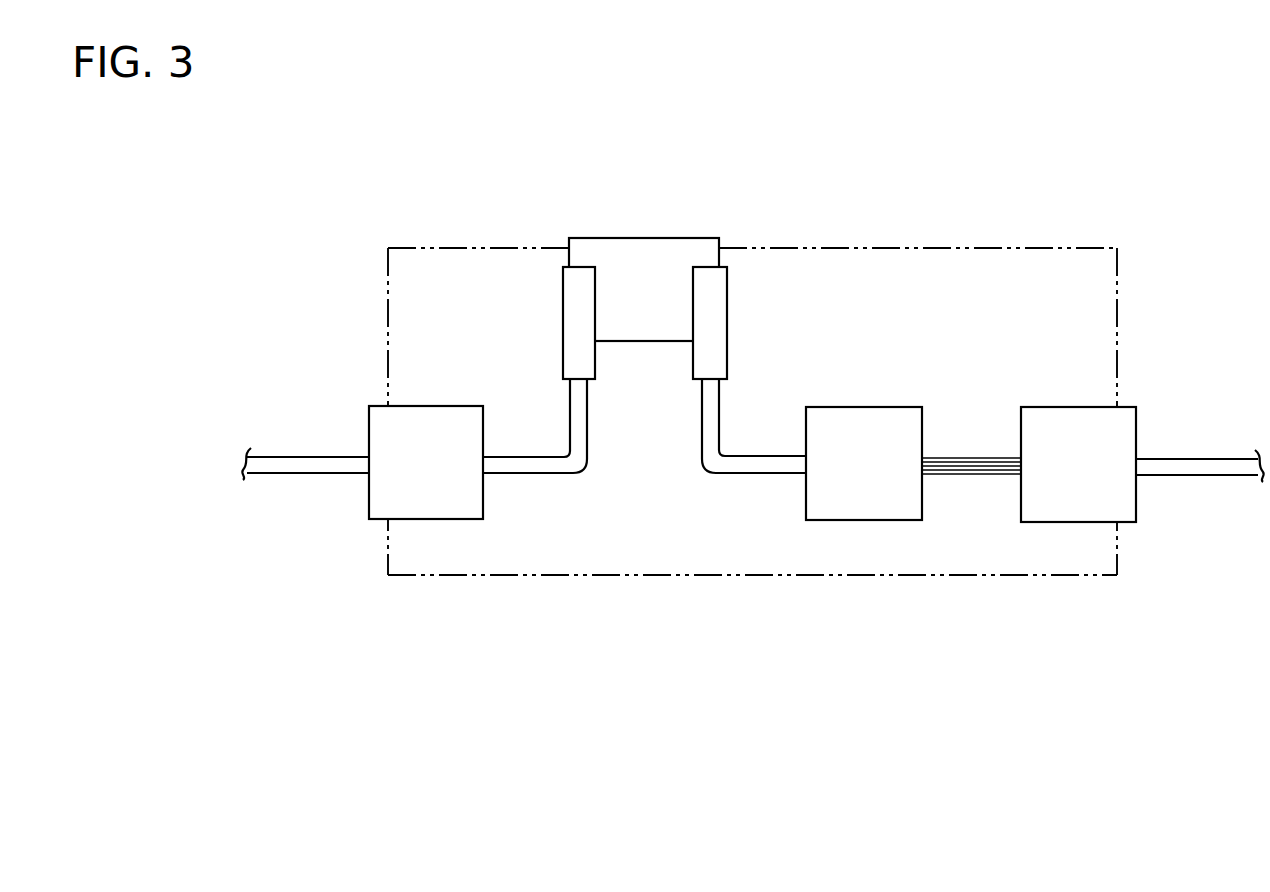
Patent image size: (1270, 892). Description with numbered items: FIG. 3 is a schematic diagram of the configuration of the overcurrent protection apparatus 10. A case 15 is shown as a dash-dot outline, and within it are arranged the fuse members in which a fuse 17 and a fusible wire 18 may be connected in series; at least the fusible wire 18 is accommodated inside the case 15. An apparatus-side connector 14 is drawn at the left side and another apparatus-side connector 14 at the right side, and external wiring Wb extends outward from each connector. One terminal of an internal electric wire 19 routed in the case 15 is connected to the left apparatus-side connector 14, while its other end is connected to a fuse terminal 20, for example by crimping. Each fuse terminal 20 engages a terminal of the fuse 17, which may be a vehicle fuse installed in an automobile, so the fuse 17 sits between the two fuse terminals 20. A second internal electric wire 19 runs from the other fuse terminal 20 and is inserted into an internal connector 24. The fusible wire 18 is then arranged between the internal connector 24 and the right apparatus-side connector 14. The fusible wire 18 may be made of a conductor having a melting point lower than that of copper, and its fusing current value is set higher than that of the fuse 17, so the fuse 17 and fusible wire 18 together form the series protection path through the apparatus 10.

The overcurrent protection apparatus 10 is at (1045, 170).
The apparatus-side connector 14 is at (381, 418).
The case 15 is at (948, 250).
The fuse 17 is at (644, 260).
The fusible wire 18 is at (966, 475).
The internal electric wire 19 is at (545, 468).
The fuse terminal 20 is at (574, 294).
The internal connector 24 is at (864, 498).
The wire harness Wb is at (285, 467).